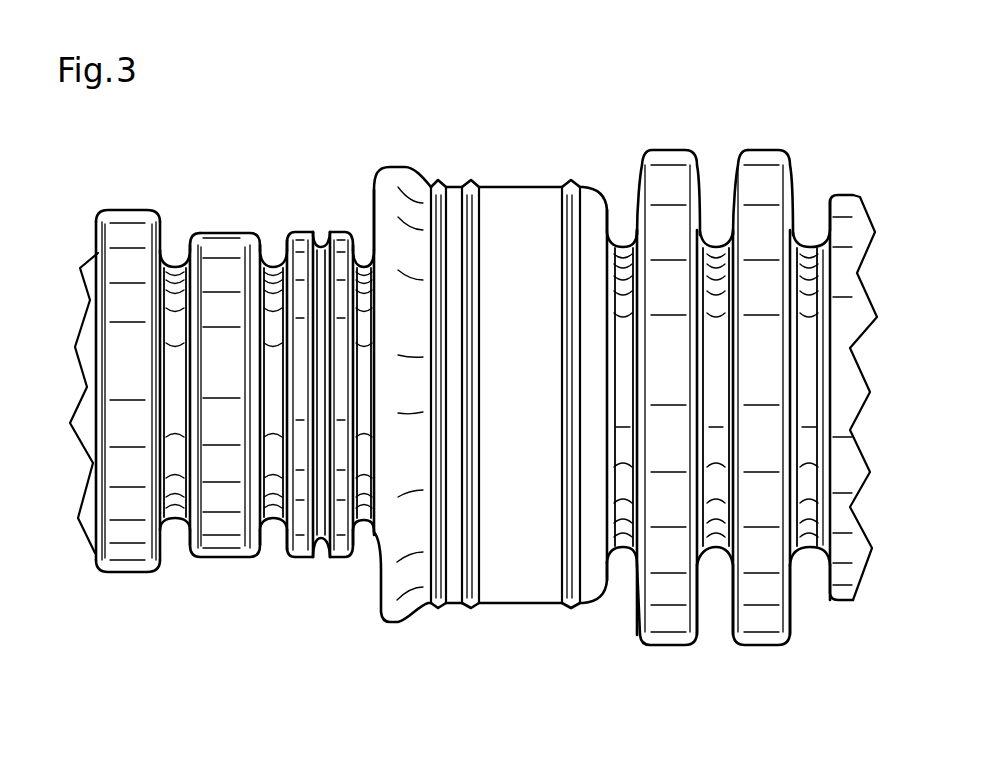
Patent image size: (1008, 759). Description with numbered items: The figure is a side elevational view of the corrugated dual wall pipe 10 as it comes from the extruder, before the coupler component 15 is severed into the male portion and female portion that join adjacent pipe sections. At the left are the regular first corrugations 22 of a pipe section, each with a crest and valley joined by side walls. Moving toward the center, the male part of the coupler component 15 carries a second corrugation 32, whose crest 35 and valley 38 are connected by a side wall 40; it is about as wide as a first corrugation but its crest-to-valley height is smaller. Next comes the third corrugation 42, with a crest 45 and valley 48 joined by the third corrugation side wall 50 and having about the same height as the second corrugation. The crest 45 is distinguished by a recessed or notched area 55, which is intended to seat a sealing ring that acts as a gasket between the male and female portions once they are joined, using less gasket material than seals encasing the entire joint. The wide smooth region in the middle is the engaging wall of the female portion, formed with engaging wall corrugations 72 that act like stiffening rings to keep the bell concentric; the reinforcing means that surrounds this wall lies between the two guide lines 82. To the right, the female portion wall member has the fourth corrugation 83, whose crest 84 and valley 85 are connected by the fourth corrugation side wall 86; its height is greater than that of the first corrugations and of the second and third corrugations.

The corrugated dual wall pipe 10 is at (265, 147).
The coupler component 15 is at (523, 155).
The first corrugation 22 is at (127, 197).
The second corrugation 32 is at (213, 210).
The crest of second corrugation 35 is at (222, 230).
The valley of second corrugation 38 is at (171, 266).
The side wall of second corrugation 40 is at (192, 222).
The third corrugation 42 is at (335, 222).
The crest of third corrugation 45 is at (297, 228).
The valley of third corrugation 48 is at (367, 265).
The third corrugation side wall 50 is at (352, 262).
The recessed or notched area 55 is at (318, 245).
The engaging wall corrugation 72 is at (438, 178).
The guide lines 82 is at (469, 178).
The fourth corrugation 83 is at (670, 135).
The crest of fourth corrugation 84 is at (770, 152).
The valley of fourth corrugation 85 is at (717, 243).
The fourth corrugation side wall 86 is at (795, 182).